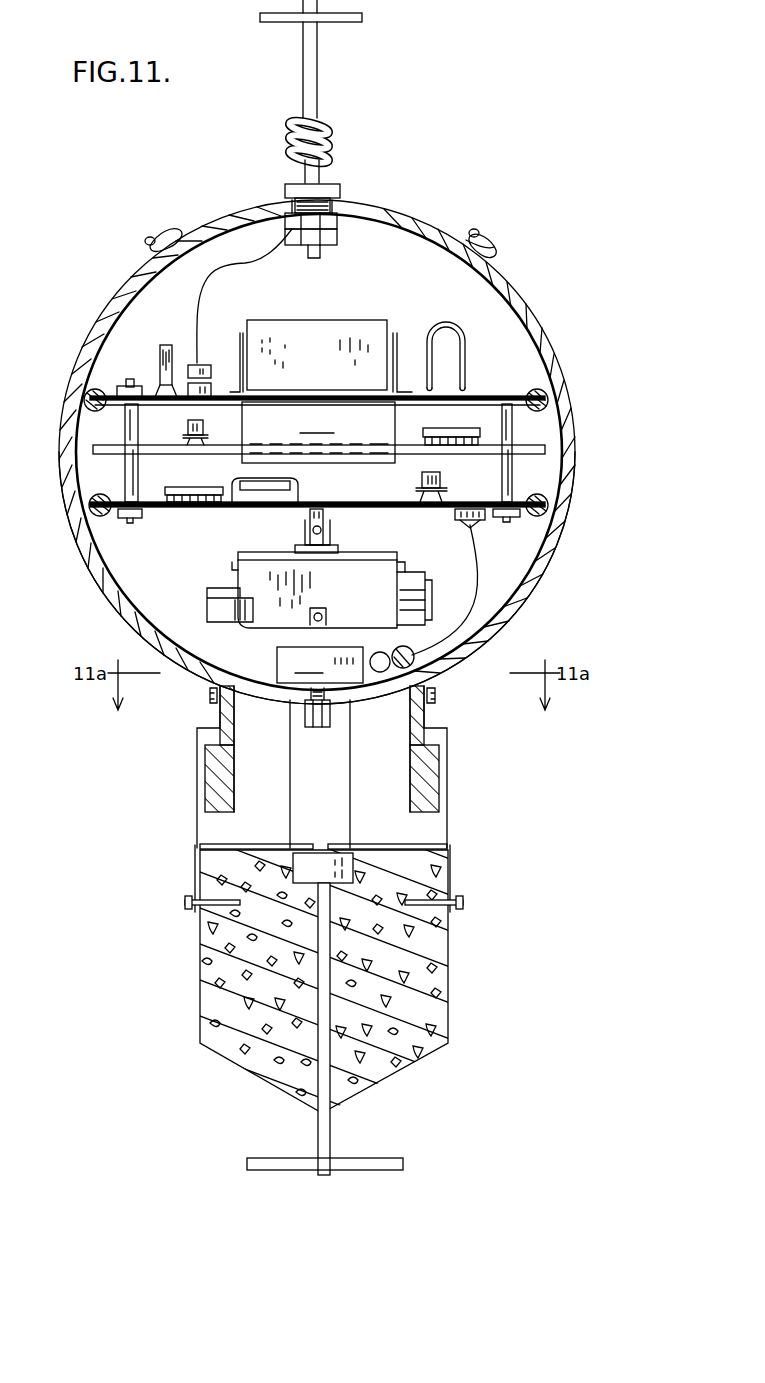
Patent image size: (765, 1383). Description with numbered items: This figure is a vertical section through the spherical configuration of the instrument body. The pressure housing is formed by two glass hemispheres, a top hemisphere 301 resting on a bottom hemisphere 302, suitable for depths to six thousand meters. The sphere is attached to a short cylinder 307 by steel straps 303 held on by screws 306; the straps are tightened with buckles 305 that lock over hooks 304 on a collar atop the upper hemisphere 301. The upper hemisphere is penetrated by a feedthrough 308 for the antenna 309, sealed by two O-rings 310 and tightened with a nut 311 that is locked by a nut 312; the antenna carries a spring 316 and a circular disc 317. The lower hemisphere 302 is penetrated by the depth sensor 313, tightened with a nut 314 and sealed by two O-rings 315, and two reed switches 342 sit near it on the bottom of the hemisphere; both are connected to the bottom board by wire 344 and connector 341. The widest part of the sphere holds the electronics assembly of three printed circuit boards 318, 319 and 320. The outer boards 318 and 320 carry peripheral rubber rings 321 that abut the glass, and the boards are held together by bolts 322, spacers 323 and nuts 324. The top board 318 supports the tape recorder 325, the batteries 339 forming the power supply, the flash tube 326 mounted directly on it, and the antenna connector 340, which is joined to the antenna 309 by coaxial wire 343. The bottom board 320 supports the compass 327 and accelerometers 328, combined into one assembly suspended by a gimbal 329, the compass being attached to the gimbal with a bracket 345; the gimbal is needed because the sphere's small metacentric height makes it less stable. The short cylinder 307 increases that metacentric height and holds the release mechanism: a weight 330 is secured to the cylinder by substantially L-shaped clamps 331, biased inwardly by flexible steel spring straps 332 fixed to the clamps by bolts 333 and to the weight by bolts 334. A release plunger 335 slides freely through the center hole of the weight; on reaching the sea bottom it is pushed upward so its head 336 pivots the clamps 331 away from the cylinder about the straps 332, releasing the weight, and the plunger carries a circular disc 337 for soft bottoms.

The top glass hemisphere 301 is at (200, 223).
The bottom glass hemisphere 302 is at (112, 593).
The steel straps 303 is at (104, 309).
The hooks 304 is at (485, 232).
The buckles 305 is at (496, 246).
The screws 306 is at (210, 697).
The short cylinder 307 is at (437, 699).
The antenna feedthrough 308 is at (340, 190).
The antenna 309 is at (317, 78).
The O-rings 310 is at (285, 196).
The nut 311 is at (337, 225).
The lock nut 312 is at (337, 247).
The depth sensor 313 is at (320, 665).
The nut 314 is at (333, 722).
The O-rings 315 is at (300, 702).
The spring 316 is at (333, 128).
The circular disc 317 is at (355, 22).
The top printed circuit board 318 is at (417, 393).
The middle printed circuit board 319 is at (418, 449).
The bottom printed circuit board 320 is at (383, 501).
The peripheral rubber rings 321 is at (533, 392).
The bolts 322 is at (129, 378).
The spacers 323 is at (165, 440).
The nuts 324 is at (144, 384).
The tape recorder 325 is at (318, 432).
The flash tube 326 is at (458, 326).
The compass 327 is at (276, 615).
The accelerometers 328 is at (210, 605).
The gimbal 329 is at (330, 538).
The weight 330 is at (440, 992).
The clamps 331 is at (447, 812).
The spring straps 332 is at (452, 880).
The bolts 333 is at (450, 848).
The bolts 334 is at (462, 906).
The release plunger 335 is at (332, 1128).
The plunger head 336 is at (322, 855).
The circular disc 337 is at (403, 1161).
The batteries 339 is at (332, 325).
The antenna connector 340 is at (205, 362).
The connector 341 is at (478, 527).
The reed switches 342 is at (383, 650).
The coaxial wire 343 is at (228, 263).
The wire 344 is at (471, 562).
The bracket 345 is at (257, 552).